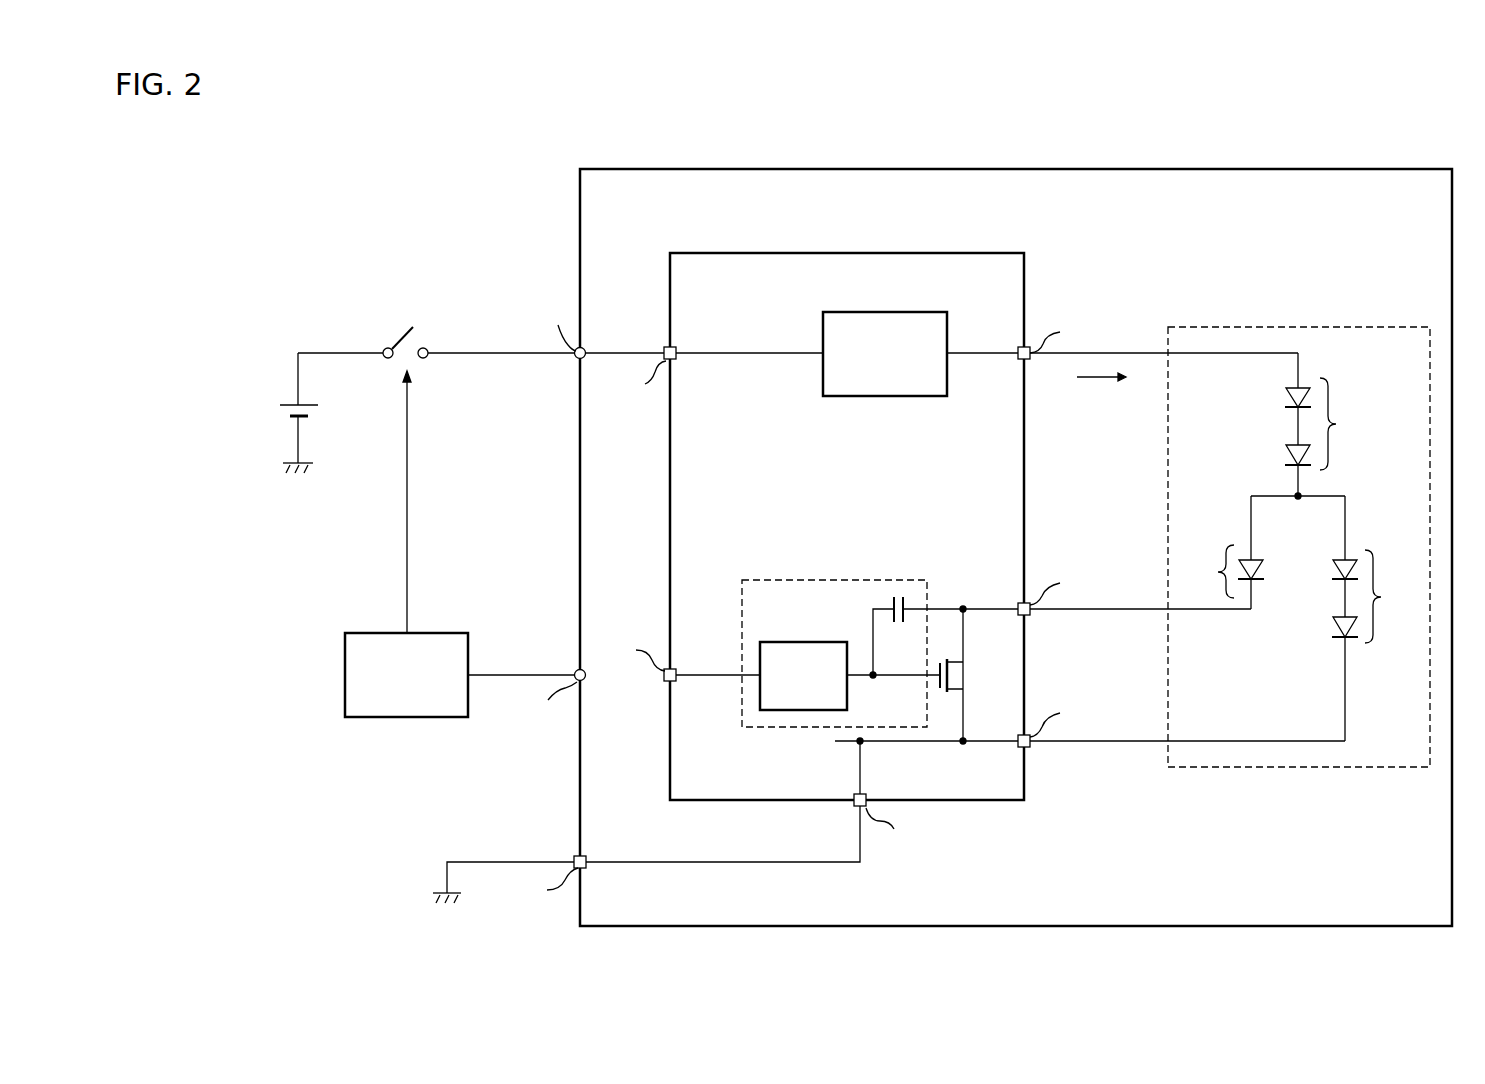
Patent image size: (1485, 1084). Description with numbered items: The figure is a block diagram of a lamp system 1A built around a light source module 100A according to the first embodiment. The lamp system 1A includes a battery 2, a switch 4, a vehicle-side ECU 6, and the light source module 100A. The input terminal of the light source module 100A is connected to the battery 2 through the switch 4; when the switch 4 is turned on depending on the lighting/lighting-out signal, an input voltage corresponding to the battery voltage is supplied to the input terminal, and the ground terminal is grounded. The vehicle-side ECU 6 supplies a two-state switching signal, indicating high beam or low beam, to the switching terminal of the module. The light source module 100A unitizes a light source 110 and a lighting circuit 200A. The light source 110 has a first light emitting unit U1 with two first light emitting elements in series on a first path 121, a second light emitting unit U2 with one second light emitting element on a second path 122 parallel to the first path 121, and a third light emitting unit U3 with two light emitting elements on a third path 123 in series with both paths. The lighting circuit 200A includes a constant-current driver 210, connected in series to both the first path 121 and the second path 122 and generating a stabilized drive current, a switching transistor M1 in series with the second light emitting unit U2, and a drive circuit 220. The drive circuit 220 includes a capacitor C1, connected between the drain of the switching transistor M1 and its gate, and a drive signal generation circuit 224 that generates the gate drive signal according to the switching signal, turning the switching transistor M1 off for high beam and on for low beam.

The lamp system 1A is at (1423, 113).
The battery 2 is at (284, 412).
The switch 4 is at (415, 325).
The vehicle-side electronic control unit (ECU) 6 is at (407, 718).
The light source module 100A is at (1192, 169).
The lighting circuit 200A is at (911, 253).
The constant-current driver 210 is at (884, 312).
The drive circuit 220 is at (835, 580).
The drive signal generation circuit 224 is at (797, 642).
The capacitor C1 is at (899, 628).
The switching transistor M1 is at (967, 674).
The light source 110 is at (1309, 327).
The first path 121 is at (1350, 524).
The second path 122 is at (1250, 528).
The third path 123 is at (1300, 482).
The first light emitting unit U1 is at (1389, 596).
The second light emitting unit U2 is at (1209, 571).
The third light emitting unit U3 is at (1344, 424).